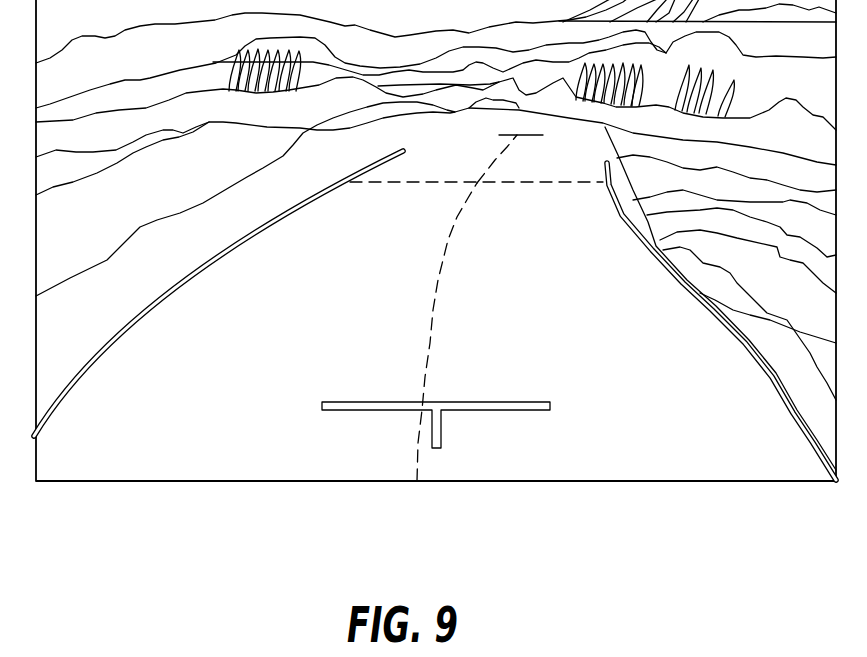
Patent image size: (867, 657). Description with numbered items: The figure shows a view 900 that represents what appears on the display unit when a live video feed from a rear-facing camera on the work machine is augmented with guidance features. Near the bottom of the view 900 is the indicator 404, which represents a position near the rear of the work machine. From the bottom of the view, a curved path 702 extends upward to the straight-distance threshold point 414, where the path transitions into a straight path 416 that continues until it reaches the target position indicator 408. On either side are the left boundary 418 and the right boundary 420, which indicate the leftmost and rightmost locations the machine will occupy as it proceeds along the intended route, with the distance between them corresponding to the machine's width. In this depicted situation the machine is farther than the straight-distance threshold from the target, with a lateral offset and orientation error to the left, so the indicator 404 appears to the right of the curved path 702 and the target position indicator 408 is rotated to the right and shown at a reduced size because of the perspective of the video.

The view 900 is at (106, 14).
The indicator 404 is at (495, 401).
The target position indicator 408 is at (514, 135).
The straight-distance threshold point 414 is at (542, 183).
The straight path 416 is at (497, 163).
The left boundary 418 is at (668, 257).
The right boundary 420 is at (153, 309).
The curved path 702 is at (447, 242).